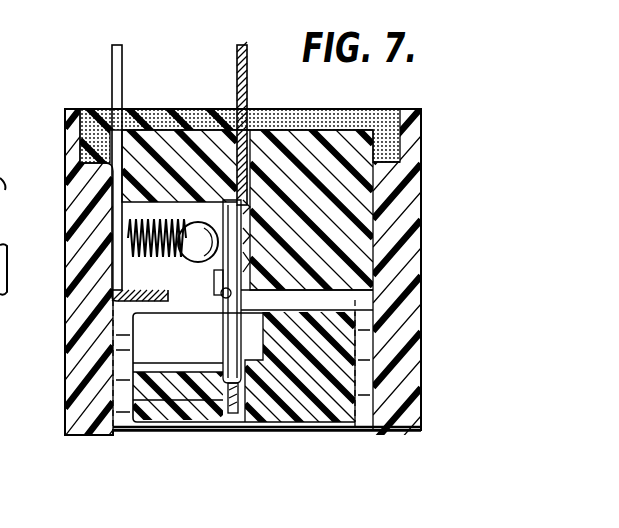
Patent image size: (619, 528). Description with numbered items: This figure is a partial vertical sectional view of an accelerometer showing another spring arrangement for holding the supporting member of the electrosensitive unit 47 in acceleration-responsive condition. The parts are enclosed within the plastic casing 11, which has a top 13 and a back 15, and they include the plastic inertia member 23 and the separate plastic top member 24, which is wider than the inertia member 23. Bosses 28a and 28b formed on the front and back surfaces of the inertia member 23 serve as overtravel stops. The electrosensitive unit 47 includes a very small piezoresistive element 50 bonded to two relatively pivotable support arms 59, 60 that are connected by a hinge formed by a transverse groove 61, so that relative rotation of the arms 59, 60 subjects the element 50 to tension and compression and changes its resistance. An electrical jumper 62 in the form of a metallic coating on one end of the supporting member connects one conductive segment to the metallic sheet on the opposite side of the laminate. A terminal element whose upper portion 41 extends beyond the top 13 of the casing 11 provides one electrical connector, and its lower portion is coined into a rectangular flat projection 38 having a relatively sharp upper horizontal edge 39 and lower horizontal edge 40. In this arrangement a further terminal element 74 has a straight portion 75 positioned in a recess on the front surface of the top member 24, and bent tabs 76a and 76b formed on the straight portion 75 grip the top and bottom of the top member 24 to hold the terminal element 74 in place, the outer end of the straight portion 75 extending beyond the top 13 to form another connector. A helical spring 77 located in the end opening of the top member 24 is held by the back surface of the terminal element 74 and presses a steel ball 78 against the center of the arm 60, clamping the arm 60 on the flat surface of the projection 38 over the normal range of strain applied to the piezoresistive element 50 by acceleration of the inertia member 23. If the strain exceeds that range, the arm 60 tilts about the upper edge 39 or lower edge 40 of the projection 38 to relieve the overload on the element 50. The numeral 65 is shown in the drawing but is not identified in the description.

The casing 11 is at (425, 350).
The top 13 is at (82, 110).
The back 15 is at (415, 158).
The inertia member 23 is at (348, 428).
The top member 24 is at (388, 226).
The boss 28a is at (118, 352).
The boss 28b is at (365, 318).
The flat projection 38 is at (247, 238).
The upper horizontal edge 39 is at (245, 207).
The lower horizontal edge 40 is at (250, 263).
The upper portion of terminal element 41 is at (260, 47).
The electrosensitive unit 47 is at (225, 328).
The piezoresistive element 50 is at (215, 295).
The support arm 59 is at (232, 350).
The support arm 60 is at (240, 202).
The transverse groove 61 is at (232, 297).
The electrical jumper 62 is at (197, 427).
The rod tip 65 is at (231, 404).
The terminal element 74 is at (67, 203).
The straight portion 75 is at (112, 63).
The bent tab 76a is at (150, 110).
The bent tab 76b is at (118, 317).
The helical spring 77 is at (135, 217).
The steel ball 78 is at (197, 222).